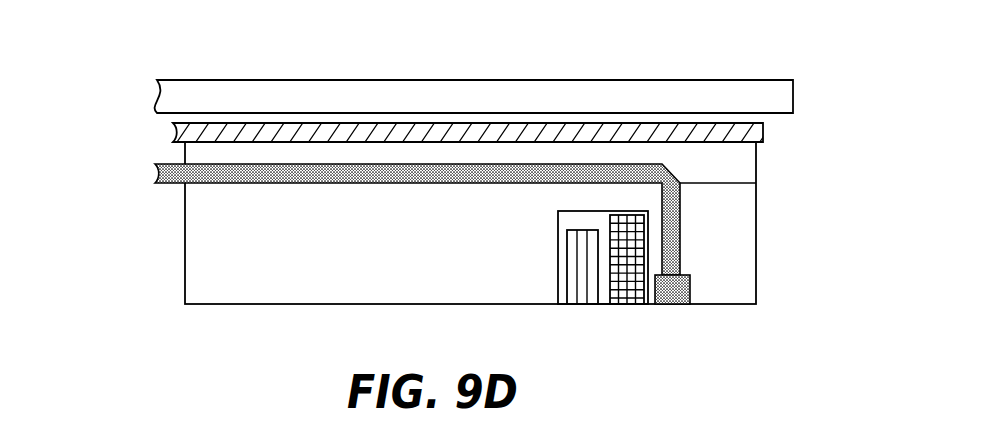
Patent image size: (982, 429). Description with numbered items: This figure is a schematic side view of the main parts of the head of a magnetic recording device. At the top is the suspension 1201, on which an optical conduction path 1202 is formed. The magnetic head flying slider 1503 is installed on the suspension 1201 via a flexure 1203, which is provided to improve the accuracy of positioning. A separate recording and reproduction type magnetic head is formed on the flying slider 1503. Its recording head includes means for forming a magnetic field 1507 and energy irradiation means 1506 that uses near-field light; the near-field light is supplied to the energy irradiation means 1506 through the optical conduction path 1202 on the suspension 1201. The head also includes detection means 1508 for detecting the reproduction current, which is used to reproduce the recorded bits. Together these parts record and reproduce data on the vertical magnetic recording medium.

The suspension 1201 is at (316, 80).
The optical conduction path 1202 is at (155, 180).
The flexure 1203 is at (765, 132).
The magnetic head flying slider 1503 is at (756, 220).
The energy irradiation means 1506 is at (675, 297).
The means for forming a magnetic field 1507 is at (623, 293).
The detection means 1508 is at (573, 290).